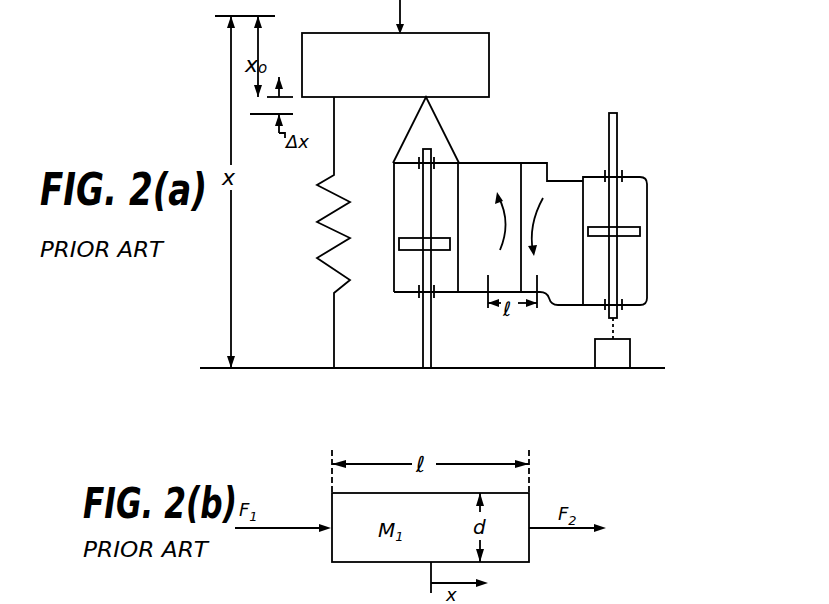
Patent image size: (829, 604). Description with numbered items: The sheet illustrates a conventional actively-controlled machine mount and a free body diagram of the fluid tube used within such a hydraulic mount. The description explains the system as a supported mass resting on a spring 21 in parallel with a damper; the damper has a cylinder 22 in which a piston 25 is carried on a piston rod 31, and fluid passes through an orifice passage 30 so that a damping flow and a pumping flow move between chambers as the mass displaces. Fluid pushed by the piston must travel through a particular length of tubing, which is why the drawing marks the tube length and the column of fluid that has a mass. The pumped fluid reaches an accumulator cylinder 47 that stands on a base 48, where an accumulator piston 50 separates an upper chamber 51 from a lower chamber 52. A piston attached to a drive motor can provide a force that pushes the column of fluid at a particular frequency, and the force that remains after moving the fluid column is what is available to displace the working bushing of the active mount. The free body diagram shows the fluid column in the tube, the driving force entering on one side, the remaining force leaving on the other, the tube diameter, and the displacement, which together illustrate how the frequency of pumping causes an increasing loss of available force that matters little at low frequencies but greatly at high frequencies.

The spring 21 is at (327, 233).
The damper cylinder 22 is at (397, 263).
The piston 25 is at (398, 246).
The orifice passage 30 is at (444, 195).
The piston rod 31 is at (442, 277).
The accumulator cylinder 47 is at (648, 188).
The base 48 is at (631, 347).
The accumulator piston 50 is at (641, 230).
The upper chamber 51 is at (641, 215).
The lower chamber 52 is at (641, 276).